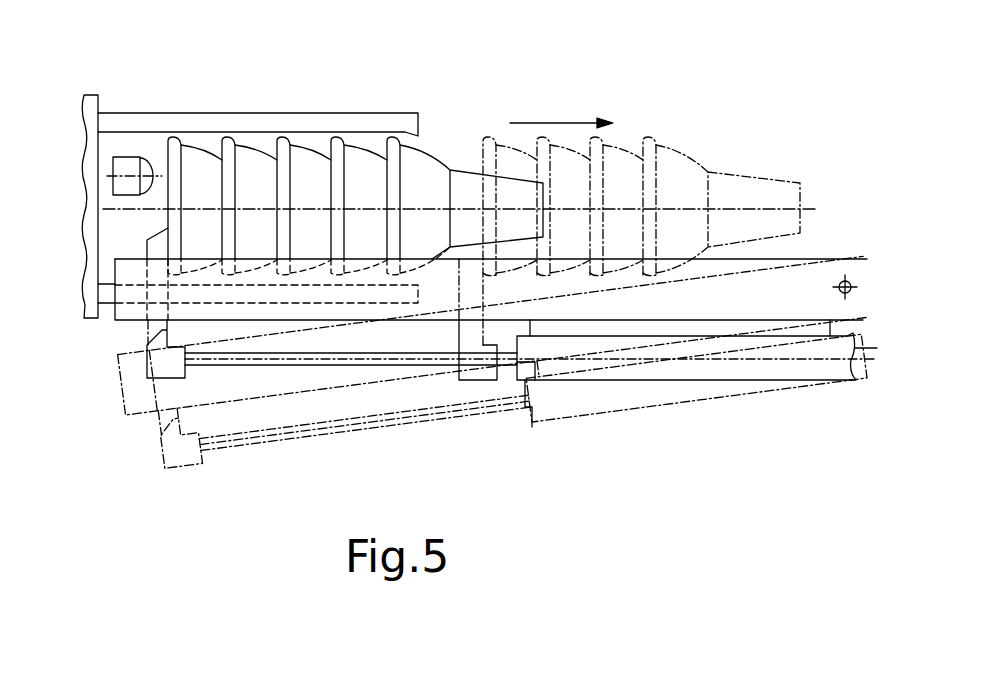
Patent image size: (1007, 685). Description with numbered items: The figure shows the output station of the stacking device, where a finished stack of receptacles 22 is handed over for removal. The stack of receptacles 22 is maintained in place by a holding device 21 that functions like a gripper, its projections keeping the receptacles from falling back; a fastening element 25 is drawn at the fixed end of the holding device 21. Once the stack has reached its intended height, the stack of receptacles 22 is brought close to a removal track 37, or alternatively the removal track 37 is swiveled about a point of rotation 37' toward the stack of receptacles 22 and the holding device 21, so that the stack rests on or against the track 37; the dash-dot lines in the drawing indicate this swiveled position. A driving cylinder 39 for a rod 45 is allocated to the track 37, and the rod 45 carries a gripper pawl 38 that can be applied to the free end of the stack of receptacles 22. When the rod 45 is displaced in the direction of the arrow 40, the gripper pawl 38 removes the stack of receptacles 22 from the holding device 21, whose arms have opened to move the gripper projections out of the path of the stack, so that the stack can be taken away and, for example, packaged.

The holding device 21 is at (183, 120).
The stack of receptacles 22 is at (441, 147).
The fastening bolt 25 is at (125, 186).
The removal track 37 is at (494, 252).
The point of rotation 37' is at (491, 305).
The gripper pawl 38 is at (158, 430).
The driving cylinder 39 is at (657, 397).
The direction of movement arrow 40 is at (563, 121).
The rod 45 is at (465, 418).